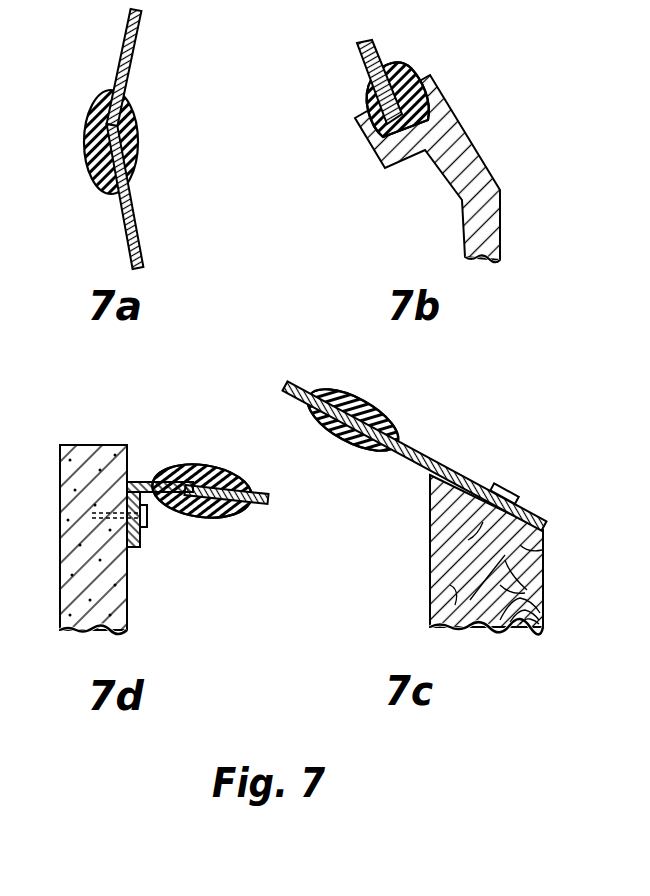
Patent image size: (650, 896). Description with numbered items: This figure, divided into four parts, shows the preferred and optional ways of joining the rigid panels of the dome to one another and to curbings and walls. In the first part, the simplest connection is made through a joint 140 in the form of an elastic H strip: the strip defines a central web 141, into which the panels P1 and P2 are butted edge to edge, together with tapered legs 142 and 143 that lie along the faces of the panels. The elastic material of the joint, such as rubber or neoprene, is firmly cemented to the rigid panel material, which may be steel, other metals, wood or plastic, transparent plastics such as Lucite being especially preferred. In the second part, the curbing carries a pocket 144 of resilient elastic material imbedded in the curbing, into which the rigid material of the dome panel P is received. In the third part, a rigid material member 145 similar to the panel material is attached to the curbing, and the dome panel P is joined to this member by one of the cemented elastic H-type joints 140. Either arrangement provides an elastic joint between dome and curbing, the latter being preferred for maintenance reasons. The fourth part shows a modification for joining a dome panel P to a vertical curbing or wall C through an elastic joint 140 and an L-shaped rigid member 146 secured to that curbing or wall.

The joint 140 is at (154, 163).
The web 141 is at (128, 138).
The tapered leg 142 is at (128, 97).
The tapered leg 143 is at (102, 186).
The pocket 144 is at (402, 62).
The rigid material member 145 is at (474, 483).
The L-shaped rigid member 146 is at (145, 482).
The dome panel P is at (376, 48).
The panel P1 is at (126, 36).
The panel P2 is at (144, 251).
The vertical curbing or wall C is at (467, 126).